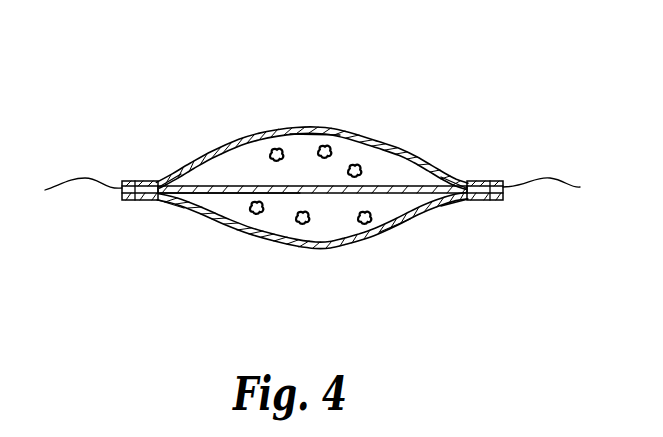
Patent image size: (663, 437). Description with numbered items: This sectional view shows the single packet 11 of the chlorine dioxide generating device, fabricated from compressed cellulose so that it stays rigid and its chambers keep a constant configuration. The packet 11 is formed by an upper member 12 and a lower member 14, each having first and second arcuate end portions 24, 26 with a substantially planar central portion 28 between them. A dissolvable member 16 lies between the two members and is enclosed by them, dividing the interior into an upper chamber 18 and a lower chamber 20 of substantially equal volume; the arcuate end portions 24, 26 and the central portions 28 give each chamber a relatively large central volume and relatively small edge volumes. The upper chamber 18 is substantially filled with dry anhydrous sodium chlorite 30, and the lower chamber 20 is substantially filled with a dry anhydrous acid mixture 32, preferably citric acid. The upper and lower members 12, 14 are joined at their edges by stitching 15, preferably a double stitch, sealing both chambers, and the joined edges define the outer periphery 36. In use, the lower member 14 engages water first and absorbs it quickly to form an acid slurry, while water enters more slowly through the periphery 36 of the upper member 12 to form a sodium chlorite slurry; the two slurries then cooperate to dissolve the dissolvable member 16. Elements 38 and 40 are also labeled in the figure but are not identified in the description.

The packet 11 is at (405, 113).
The upper member 12 is at (235, 185).
The lower member 14 is at (263, 243).
The stitching 15 is at (140, 181).
The dissolvable member 16 is at (155, 183).
The upper chamber 18 is at (298, 150).
The lower chamber 20 is at (398, 208).
The first arcuate end portion 24 is at (178, 172).
The second arcuate end portion 26 is at (447, 168).
The central portion 28 is at (313, 129).
The sodium chlorite 30 is at (354, 165).
The acid mixture 32 is at (262, 209).
The periphery 36 is at (313, 189).
The central membrane 38 is at (235, 185).
The membrane lower surface 40 is at (233, 195).